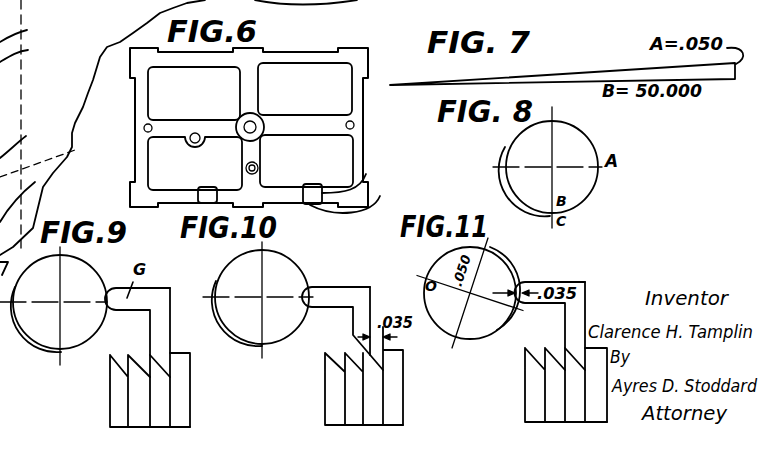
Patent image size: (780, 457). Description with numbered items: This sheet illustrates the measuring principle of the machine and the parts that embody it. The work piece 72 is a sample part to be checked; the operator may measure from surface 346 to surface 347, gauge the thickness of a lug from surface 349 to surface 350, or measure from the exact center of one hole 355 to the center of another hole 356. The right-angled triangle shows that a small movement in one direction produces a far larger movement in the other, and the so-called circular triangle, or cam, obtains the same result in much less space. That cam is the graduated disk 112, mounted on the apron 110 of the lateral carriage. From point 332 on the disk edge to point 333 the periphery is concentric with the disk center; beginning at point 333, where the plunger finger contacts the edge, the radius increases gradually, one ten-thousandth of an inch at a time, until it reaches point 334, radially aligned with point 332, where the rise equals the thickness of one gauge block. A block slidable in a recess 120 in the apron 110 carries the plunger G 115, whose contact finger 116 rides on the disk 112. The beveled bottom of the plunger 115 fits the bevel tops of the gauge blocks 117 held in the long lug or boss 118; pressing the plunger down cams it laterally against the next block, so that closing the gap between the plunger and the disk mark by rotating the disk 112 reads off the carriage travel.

In FIG. 6, the work piece 72 is at (137, 102).
In FIG. 6, the apron 110 is at (34, 28).
In FIG. 6, the graduated disk 112 is at (33, 55).
In FIG. 6, the plunger G 115 is at (32, 140).
In FIG. 9, the plunger G 115 is at (163, 343).
In FIG. 10, the plunger G 115 is at (365, 303).
In FIG. 11, the plunger G 115 is at (587, 308).
In FIG. 9, the contact finger 116 is at (113, 310).
In FIG. 10, the contact finger 116 is at (317, 286).
In FIG. 11, the contact finger 116 is at (527, 281).
In FIG. 9, the gauge blocks 117 is at (118, 403).
In FIG. 10, the gauge blocks 117 is at (333, 395).
In FIG. 11, the gauge blocks 117 is at (535, 378).
In FIG. 6, the lug or boss 118 is at (29, 190).
In FIG. 6, the recess 120 is at (56, 155).
In FIG. 9, the point 332 is at (58, 344).
In FIG. 9, the point 333 is at (105, 299).
In FIG. 9, the point 334 is at (58, 358).
In FIG. 6, the surface 346 is at (366, 174).
In FIG. 6, the surface 347 is at (221, 168).
In FIG. 6, the surface 349 is at (368, 192).
In FIG. 6, the surface 350 is at (308, 185).
In FIG. 6, the hole 355 is at (245, 124).
In FIG. 6, the mounting hole 356 is at (348, 123).